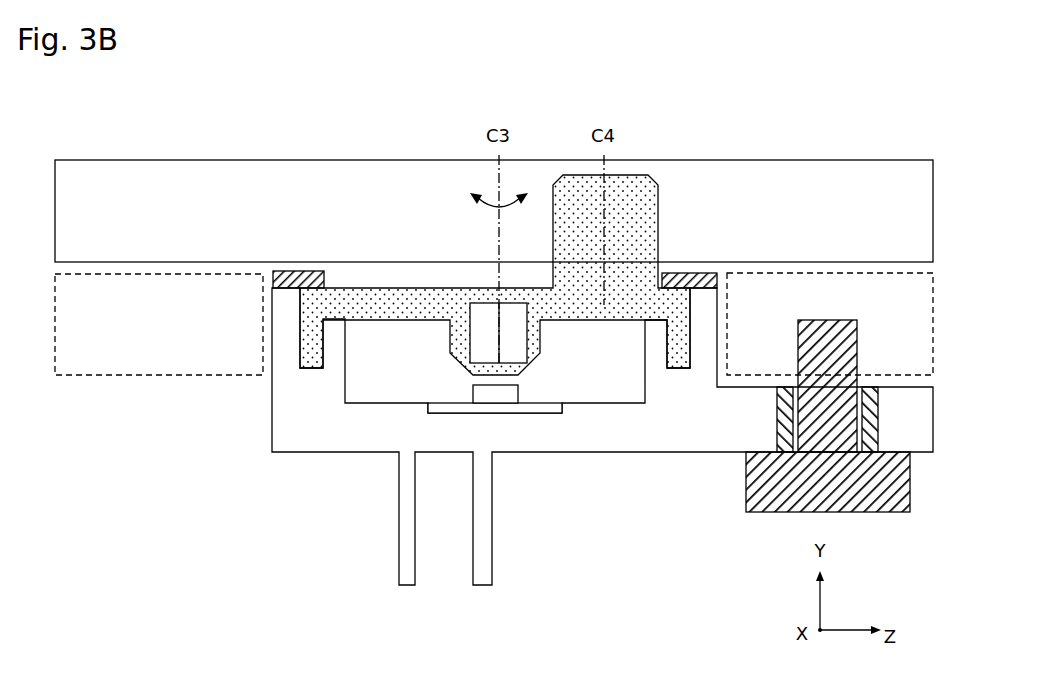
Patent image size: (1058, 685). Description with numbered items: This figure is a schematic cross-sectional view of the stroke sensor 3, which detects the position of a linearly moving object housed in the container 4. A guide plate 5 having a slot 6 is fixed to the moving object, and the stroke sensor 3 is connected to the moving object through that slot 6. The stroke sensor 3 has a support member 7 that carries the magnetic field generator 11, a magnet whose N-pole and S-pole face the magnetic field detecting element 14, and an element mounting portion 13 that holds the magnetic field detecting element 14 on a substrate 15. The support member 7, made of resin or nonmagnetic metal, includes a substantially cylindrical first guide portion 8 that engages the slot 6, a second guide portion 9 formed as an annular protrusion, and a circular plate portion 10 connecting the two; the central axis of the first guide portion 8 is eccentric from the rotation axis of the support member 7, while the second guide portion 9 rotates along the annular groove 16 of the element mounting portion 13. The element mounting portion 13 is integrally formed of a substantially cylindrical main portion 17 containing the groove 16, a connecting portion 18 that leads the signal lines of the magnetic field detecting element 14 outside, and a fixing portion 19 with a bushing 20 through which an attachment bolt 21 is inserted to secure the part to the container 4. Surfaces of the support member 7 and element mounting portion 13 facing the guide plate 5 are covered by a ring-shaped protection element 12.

The stroke sensor 3 is at (696, 63).
The container 4 is at (90, 376).
The guide plate 5 is at (833, 178).
The slot 6 is at (640, 248).
The support member 7 is at (495, 210).
The first guide portion 8 is at (680, 348).
The second guide portion 9 is at (613, 203).
The circular plate portion 10 is at (540, 307).
The magnetic field generator 11 is at (488, 310).
The ring-shaped protection element 12 is at (310, 270).
The element mounting portion 13 is at (327, 462).
The magnetic field detecting element 14 is at (508, 395).
The substrate 15 is at (550, 408).
The groove 16 is at (320, 370).
The main portion 17 is at (652, 442).
The connecting portion 18 is at (400, 533).
The fixing portion 19 is at (737, 430).
The bushing 20 is at (858, 398).
The attachment bolt 21 is at (873, 512).